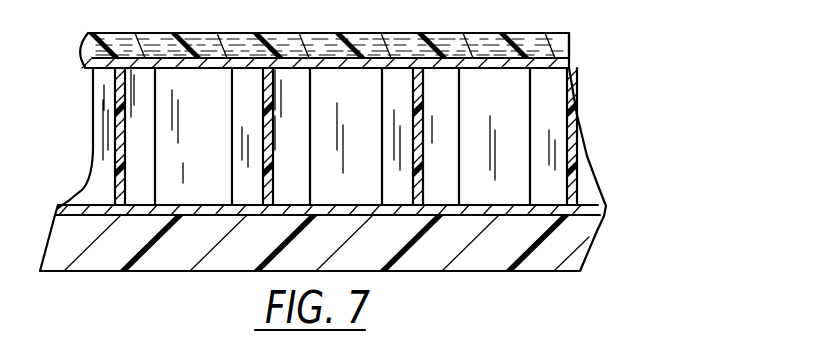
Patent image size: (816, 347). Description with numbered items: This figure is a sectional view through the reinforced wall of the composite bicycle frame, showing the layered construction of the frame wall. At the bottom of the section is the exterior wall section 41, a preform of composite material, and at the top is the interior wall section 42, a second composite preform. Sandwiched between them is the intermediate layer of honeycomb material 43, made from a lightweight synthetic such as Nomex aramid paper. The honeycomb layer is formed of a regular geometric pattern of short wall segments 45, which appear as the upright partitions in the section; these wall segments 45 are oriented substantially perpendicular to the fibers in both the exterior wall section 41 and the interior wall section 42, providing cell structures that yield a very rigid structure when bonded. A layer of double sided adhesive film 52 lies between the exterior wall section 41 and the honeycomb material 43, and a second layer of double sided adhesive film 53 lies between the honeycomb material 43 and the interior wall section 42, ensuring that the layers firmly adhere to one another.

The exterior wall section 41 is at (570, 248).
The interior wall section 42 is at (571, 43).
The layer of honeycomb material 43 is at (587, 156).
The wall segments 45 is at (128, 136).
The double sided adhesive film 52 is at (597, 213).
The second layer of double sided adhesive film 53 is at (571, 67).